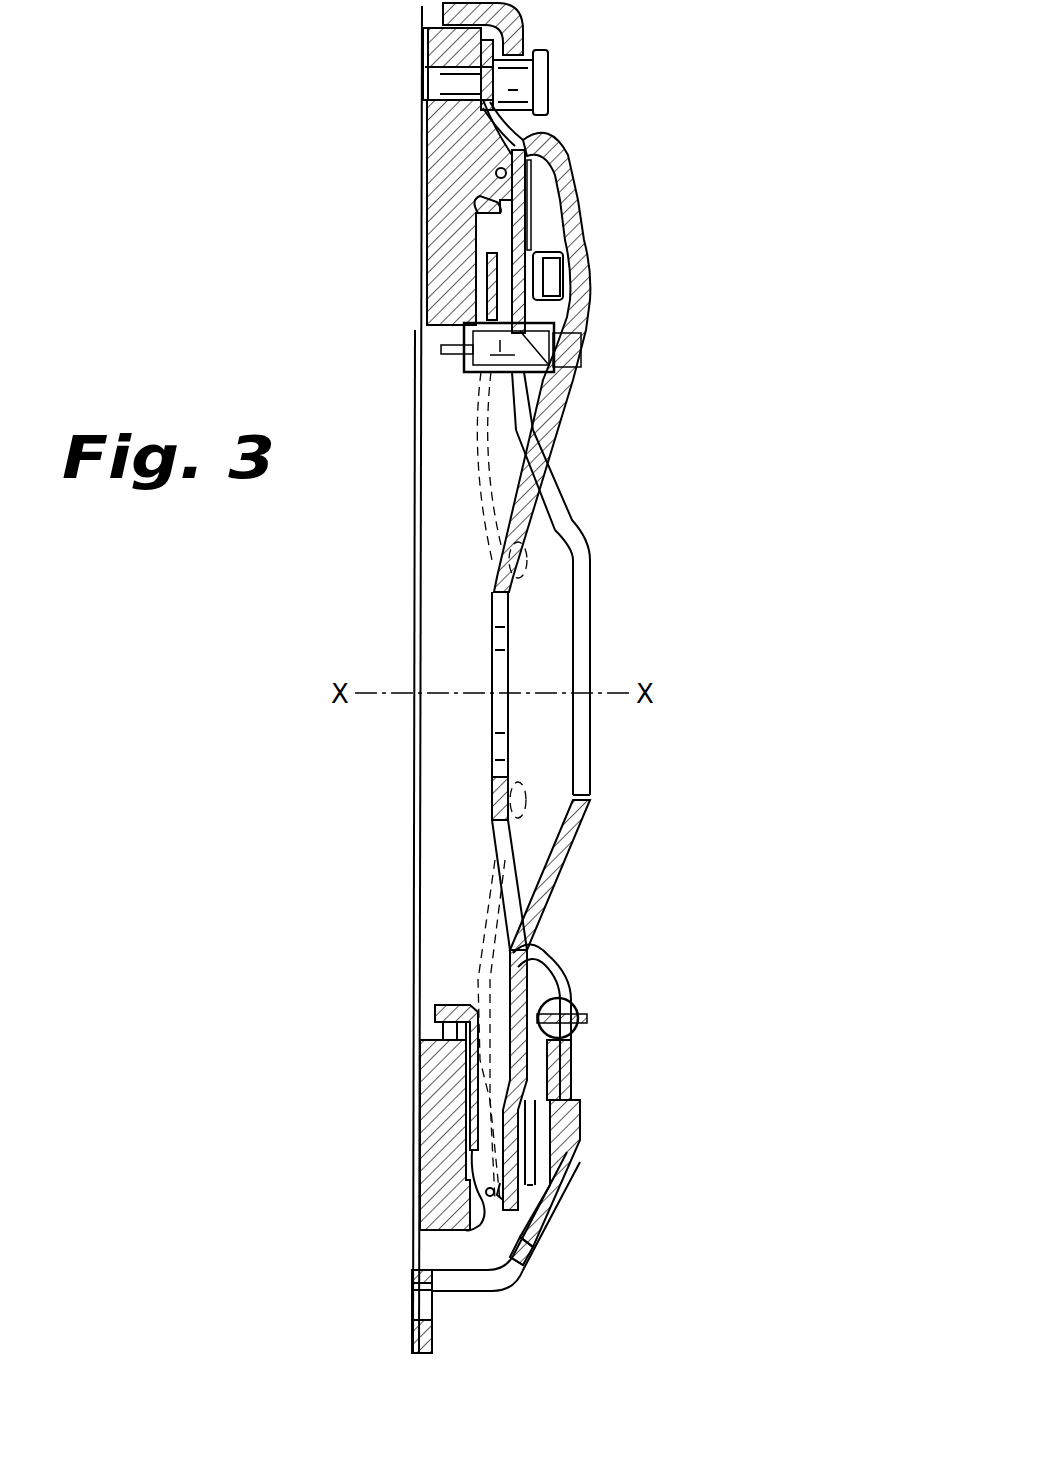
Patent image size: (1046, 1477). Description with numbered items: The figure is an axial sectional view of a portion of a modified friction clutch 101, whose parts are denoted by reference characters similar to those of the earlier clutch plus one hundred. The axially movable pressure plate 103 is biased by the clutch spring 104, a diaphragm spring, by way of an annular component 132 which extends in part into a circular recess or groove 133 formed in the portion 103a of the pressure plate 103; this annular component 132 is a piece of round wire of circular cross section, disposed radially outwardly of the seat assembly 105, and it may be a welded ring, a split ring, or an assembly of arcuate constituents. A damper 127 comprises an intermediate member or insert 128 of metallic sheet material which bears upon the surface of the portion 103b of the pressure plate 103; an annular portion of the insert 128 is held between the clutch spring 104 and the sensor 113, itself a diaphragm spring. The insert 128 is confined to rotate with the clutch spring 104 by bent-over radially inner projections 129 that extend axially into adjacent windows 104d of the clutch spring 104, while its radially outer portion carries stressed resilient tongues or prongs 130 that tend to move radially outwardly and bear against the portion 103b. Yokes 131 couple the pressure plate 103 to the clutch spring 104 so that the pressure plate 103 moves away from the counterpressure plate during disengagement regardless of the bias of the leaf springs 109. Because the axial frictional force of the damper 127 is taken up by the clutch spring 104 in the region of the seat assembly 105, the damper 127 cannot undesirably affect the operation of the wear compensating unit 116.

The friction clutch 101 is at (566, 74).
The pressure plate 103 is at (490, 1223).
The portion of the pressure plate 103a is at (480, 1192).
The portion of the pressure plate 103b is at (530, 186).
The clutch spring 104 is at (538, 898).
The windows of the clutch spring 104d is at (570, 363).
The seat assembly 105 is at (592, 1110).
The leaf springs 109 is at (428, 42).
The sensor 113 is at (472, 1042).
The wear compensating unit 116 is at (592, 1004).
The damper 127 is at (457, 229).
The intermediate member (insert) 128 is at (535, 238).
The bent-over radially inner projections 129 is at (562, 298).
The resilient tongues or prongs 130 is at (543, 209).
The yokes 131 is at (518, 148).
The annular component 132 is at (490, 1191).
The circular recess or groove 133 is at (496, 173).